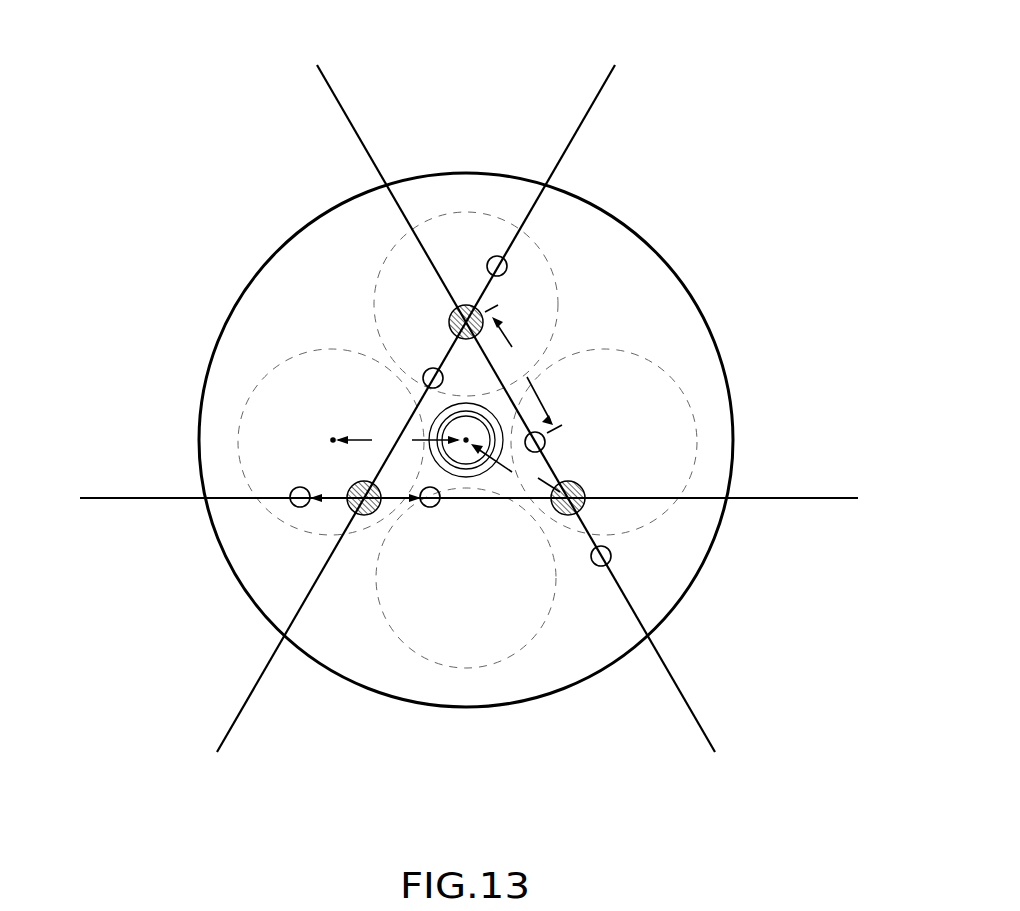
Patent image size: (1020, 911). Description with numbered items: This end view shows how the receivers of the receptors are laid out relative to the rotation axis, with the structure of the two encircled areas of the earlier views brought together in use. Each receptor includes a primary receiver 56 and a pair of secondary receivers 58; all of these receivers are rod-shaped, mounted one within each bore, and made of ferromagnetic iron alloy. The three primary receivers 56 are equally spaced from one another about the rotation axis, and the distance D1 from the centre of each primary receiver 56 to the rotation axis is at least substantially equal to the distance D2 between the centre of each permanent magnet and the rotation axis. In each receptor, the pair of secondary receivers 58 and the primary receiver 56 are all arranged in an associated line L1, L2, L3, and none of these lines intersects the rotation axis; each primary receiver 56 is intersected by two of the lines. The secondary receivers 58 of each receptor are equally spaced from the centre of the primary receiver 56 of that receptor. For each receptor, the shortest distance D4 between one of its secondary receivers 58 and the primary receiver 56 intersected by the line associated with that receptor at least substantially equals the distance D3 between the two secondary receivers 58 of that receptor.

The primary receiver 56 is at (450, 316).
The secondary receiver 58 is at (430, 370).
The line L1 is at (518, 414).
The line L2 is at (470, 499).
The line L3 is at (417, 414).
The distance D1 is at (515, 468).
The distance D2 is at (395, 440).
The distance D3 is at (365, 485).
The shortest distance D4 is at (523, 369).